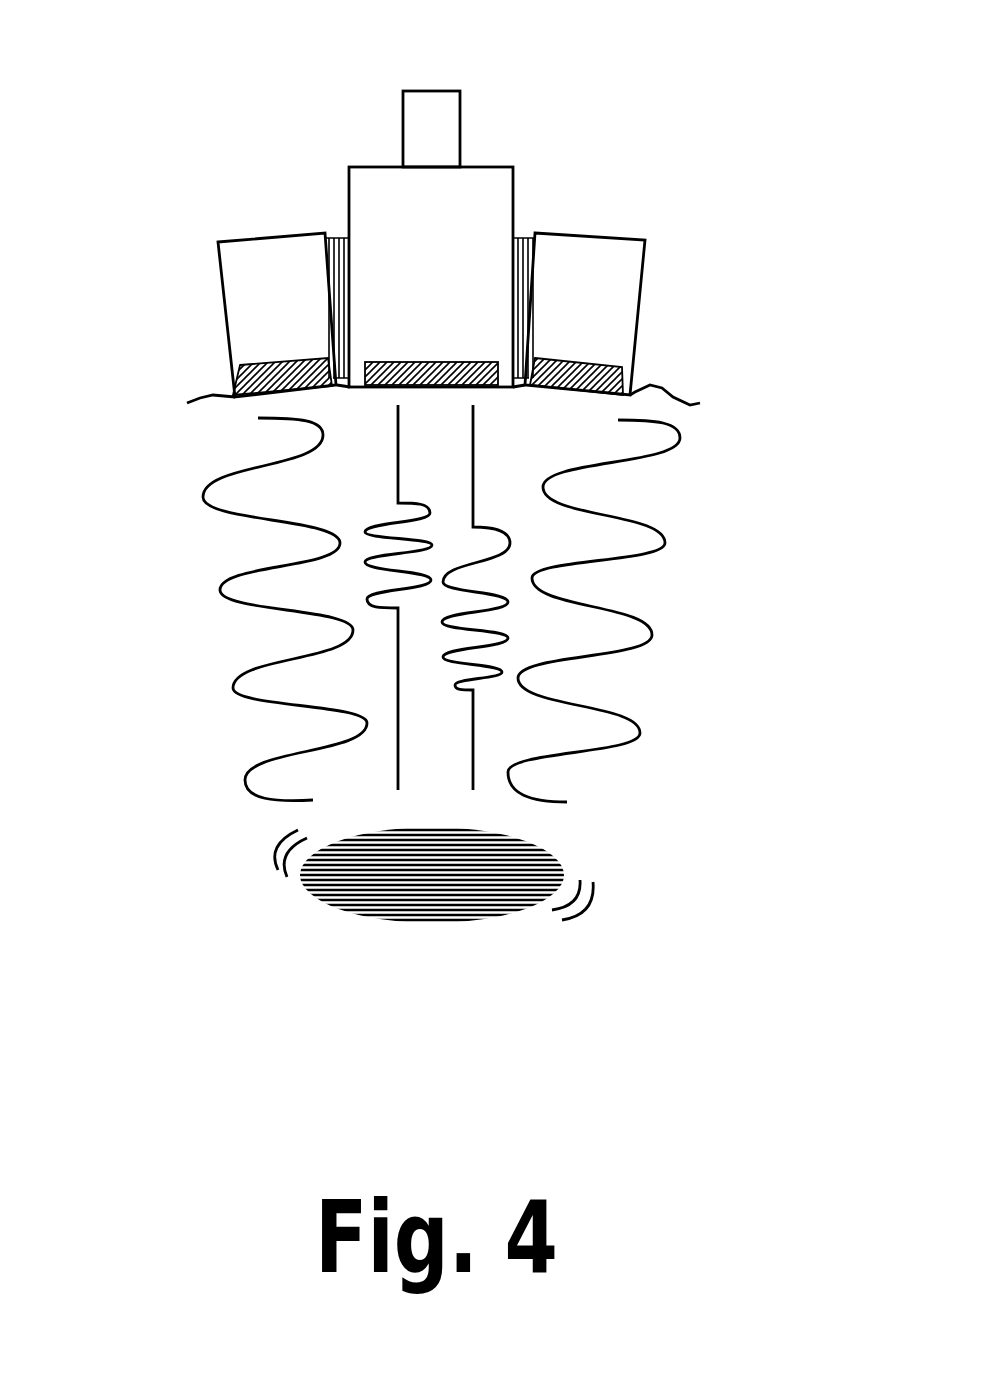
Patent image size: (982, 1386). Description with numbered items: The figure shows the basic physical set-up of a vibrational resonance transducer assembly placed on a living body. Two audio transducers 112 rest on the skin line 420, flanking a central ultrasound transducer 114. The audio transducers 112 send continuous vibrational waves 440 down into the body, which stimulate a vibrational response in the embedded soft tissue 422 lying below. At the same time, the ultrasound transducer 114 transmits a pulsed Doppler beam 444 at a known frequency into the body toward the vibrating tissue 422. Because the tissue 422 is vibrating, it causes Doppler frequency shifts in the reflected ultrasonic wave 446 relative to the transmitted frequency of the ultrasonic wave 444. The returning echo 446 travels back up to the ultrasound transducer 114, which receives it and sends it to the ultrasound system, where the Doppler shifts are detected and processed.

The audio transducer 112 is at (608, 237).
The ultrasound transducer 114 is at (370, 167).
The skin line 420 is at (517, 421).
The embedded tissue 422 is at (434, 923).
The continuous vibrational waves 440 is at (677, 622).
The pulsed Doppler beam 444 is at (377, 480).
The reflected ultrasonic wave 446 is at (494, 510).